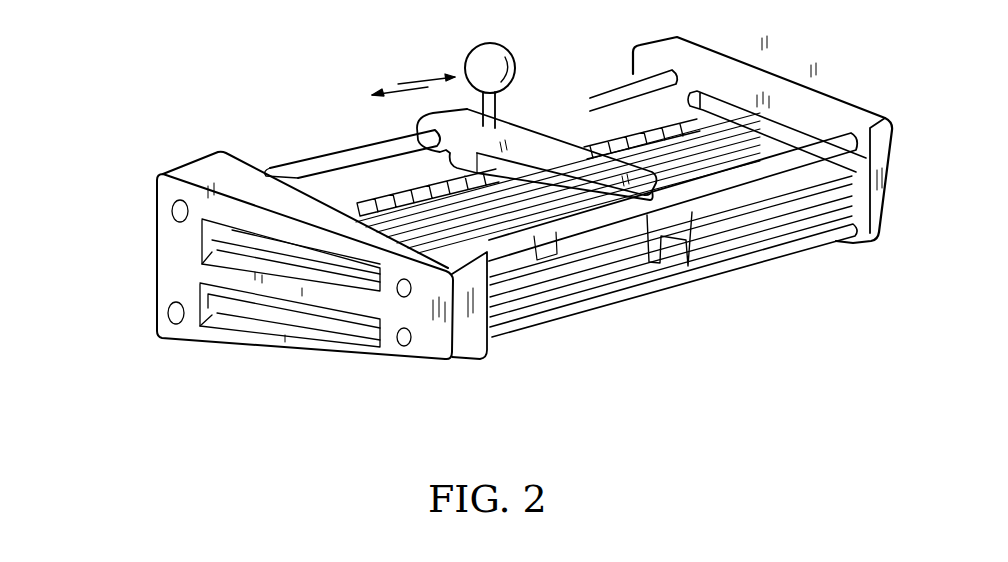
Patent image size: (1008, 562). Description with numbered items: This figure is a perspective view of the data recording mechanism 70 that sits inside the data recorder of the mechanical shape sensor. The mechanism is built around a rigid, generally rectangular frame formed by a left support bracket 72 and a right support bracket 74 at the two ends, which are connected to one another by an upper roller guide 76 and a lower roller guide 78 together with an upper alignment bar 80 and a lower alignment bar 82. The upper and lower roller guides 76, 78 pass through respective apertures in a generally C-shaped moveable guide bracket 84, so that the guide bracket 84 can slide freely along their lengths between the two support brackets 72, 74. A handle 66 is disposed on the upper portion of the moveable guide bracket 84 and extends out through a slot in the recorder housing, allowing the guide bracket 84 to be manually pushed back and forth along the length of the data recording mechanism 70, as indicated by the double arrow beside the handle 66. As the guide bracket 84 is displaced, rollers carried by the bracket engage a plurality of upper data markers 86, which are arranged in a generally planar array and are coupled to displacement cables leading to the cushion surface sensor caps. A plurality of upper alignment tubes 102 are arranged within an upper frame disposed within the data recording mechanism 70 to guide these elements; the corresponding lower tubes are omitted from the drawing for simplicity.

The handle 66 is at (497, 46).
The data recording mechanism 70 is at (262, 378).
The left support bracket 72 is at (434, 353).
The right support bracket 74 is at (737, 67).
The upper roller guide 76 is at (323, 162).
The lower roller guide 78 is at (170, 307).
The upper alignment bar 80 is at (530, 233).
The lower alignment bar 82 is at (812, 238).
The moveable guide bracket 84 is at (547, 142).
The upper data markers 86 is at (403, 188).
The upper alignment tubes 102 is at (485, 255).